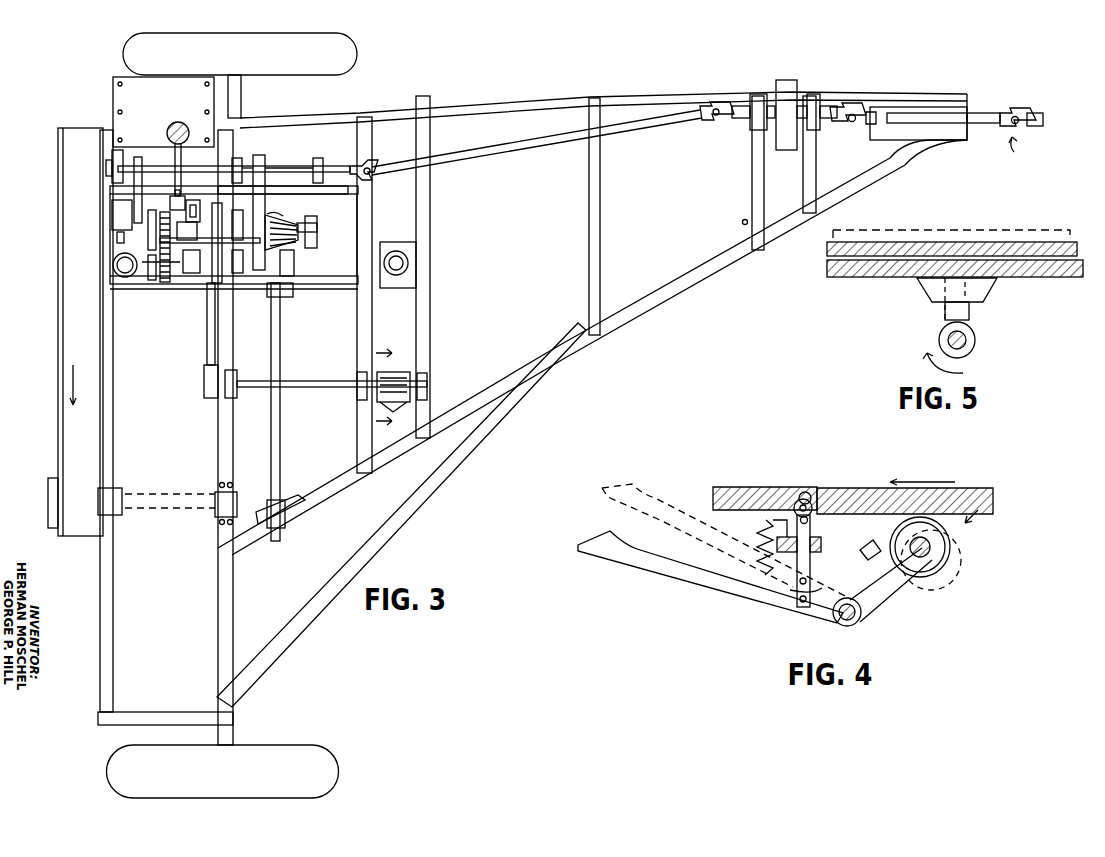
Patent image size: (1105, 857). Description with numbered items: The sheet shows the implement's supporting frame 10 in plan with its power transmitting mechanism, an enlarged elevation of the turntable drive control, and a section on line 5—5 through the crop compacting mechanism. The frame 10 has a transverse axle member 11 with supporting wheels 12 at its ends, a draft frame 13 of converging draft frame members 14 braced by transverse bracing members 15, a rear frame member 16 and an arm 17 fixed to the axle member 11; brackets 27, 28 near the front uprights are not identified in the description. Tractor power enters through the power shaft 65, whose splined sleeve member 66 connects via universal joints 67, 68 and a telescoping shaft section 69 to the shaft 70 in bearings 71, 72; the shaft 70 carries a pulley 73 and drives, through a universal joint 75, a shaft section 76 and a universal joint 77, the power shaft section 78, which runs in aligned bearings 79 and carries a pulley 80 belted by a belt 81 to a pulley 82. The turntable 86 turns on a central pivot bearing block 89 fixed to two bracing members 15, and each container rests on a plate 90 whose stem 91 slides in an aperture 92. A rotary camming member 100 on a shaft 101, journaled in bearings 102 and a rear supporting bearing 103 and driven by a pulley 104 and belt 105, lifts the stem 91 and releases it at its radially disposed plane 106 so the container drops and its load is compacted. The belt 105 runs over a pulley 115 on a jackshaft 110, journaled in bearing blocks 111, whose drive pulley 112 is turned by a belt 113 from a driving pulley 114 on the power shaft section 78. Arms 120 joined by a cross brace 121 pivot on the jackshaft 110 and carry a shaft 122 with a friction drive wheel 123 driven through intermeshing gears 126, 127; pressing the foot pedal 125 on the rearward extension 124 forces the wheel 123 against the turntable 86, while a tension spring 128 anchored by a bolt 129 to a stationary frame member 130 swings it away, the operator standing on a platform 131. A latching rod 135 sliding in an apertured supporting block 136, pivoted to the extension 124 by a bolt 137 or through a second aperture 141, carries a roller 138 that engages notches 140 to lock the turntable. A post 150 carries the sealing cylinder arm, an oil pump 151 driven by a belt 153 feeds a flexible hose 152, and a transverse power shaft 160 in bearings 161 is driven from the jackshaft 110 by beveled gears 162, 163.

In FIG. 3, the section line 5 is at (391, 389).
In FIG. 3, the supporting frame 10 is at (514, 407).
In FIG. 3, the axle member 11 is at (233, 612).
In FIG. 3, the supporting wheels 12 is at (346, 46).
In FIG. 3, the draft frame 13 is at (745, 259).
In FIG. 3, the draft frame members 14 is at (665, 98).
In FIG. 3, the bracing members 15 is at (431, 312).
In FIG. 3, the transverse rear frame member 16 is at (100, 596).
In FIG. 3, the rearwardly extending arm 17 is at (138, 720).
In FIG. 3, the bracket 27 is at (216, 512).
In FIG. 3, the bracket 28 is at (120, 505).
In FIG. 3, the power shaft 65 is at (1023, 152).
In FIG. 3, the splined sleeve member 66 is at (1040, 126).
In FIG. 3, the universal joint 67 is at (1020, 110).
In FIG. 3, the universal joint 68 is at (858, 106).
In FIG. 3, the telescoping shaft section 69 is at (928, 113).
In FIG. 3, the shaft 70 is at (801, 130).
In FIG. 3, the bearing 71 is at (822, 120).
In FIG. 3, the bearing 72 is at (756, 120).
In FIG. 3, the pulley 73 is at (786, 80).
In FIG. 3, the universal joint 75 is at (714, 120).
In FIG. 3, the shaft section 76 is at (532, 142).
In FIG. 3, the universal joint 77 is at (373, 177).
In FIG. 3, the power shaft section 78 is at (292, 165).
In FIG. 3, the bearings 79 is at (118, 150).
In FIG. 3, the pulley 80 is at (58, 197).
In FIG. 3, the power transmitting belt 81 is at (58, 346).
In FIG. 3, the pulley 82 is at (58, 504).
In FIG. 5, the turntable 86 is at (1066, 277).
In FIG. 4, the turntable 86 is at (978, 494).
In FIG. 3, the central pivot bearing block 89 is at (408, 262).
In FIG. 5, the drum supporting plate 90 is at (1015, 244).
In FIG. 5, the stem 91 is at (971, 314).
In FIG. 5, the aperture 92 is at (977, 291).
In FIG. 3, the rotary camming member 100 is at (408, 383).
In FIG. 5, the rotary camming member 100 is at (941, 334).
In FIG. 3, the shaft 101 is at (308, 388).
In FIG. 5, the shaft 101 is at (965, 348).
In FIG. 3, the bearings 102 is at (358, 398).
In FIG. 3, the rear supporting bearing 103 is at (238, 396).
In FIG. 3, the pulley 104 is at (204, 385).
In FIG. 3, the belt 105 is at (207, 344).
In FIG. 5, the radially disposed plane 106 is at (977, 338).
In FIG. 3, the jackshaft 110 is at (309, 232).
In FIG. 4, the jackshaft 110 is at (860, 618).
In FIG. 3, the bearing blocks 111 is at (318, 240).
In FIG. 3, the drive pulley 112 is at (260, 203).
In FIG. 3, the belt 113 is at (258, 156).
In FIG. 3, the driving pulley 114 is at (283, 167).
In FIG. 3, the pulley 115 is at (263, 228).
In FIG. 3, the arms 120 is at (196, 290).
In FIG. 4, the arms 120 is at (897, 590).
In FIG. 3, the cross brace 121 is at (259, 285).
In FIG. 4, the cross brace 121 is at (873, 550).
In FIG. 3, the shaft 122 is at (170, 290).
In FIG. 4, the shaft 122 is at (932, 549).
In FIG. 3, the friction drive wheel 123 is at (185, 283).
In FIG. 4, the friction drive wheel 123 is at (950, 566).
In FIG. 3, the rearward extension 124 is at (170, 134).
In FIG. 4, the rearward extension 124 is at (682, 574).
In FIG. 3, the foot pedal 125 is at (181, 122).
In FIG. 4, the foot pedal 125 is at (592, 535).
In FIG. 3, the gear 126 is at (146, 185).
In FIG. 3, the gear 127 is at (160, 278).
In FIG. 4, the tension spring 128 is at (752, 540).
In FIG. 4, the bolt 129 is at (762, 520).
In FIG. 3, the stationary frame member 130 is at (230, 188).
In FIG. 4, the stationary frame member 130 is at (745, 527).
In FIG. 3, the platform 131 is at (148, 98).
In FIG. 3, the latching rod 135 is at (172, 203).
In FIG. 4, the latching rod 135 is at (811, 559).
In FIG. 4, the apertured supporting block 136 is at (821, 543).
In FIG. 4, the bolt 137 is at (810, 578).
In FIG. 3, the roller 138 is at (193, 206).
In FIG. 4, the roller 138 is at (812, 518).
In FIG. 4, the notches 140 is at (809, 500).
In FIG. 4, the second aperture 141 is at (797, 590).
In FIG. 3, the post 150 is at (112, 270).
In FIG. 3, the oil pump 151 is at (118, 214).
In FIG. 3, the flexible hose 152 is at (118, 238).
In FIG. 3, the belt 153 is at (125, 190).
In FIG. 3, the power shaft 160 is at (282, 342).
In FIG. 3, the bearings 161 is at (291, 292).
In FIG. 3, the beveled gear 162 is at (300, 258).
In FIG. 3, the beveled gear 163 is at (298, 222).